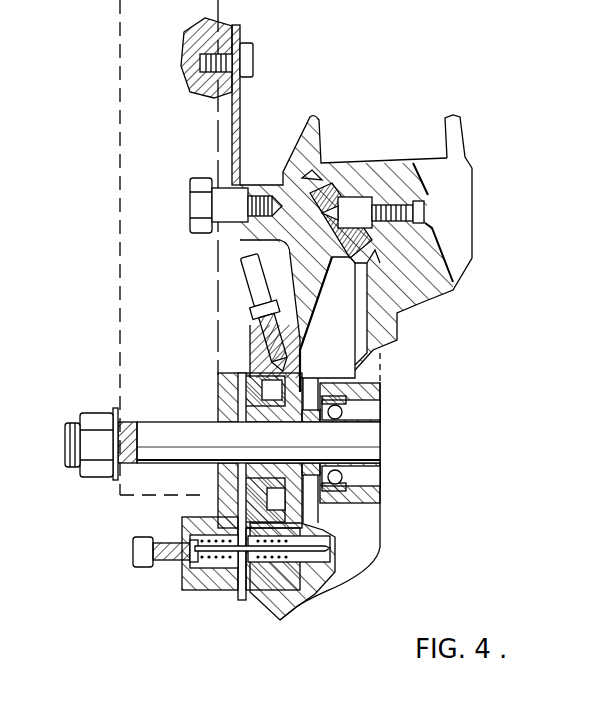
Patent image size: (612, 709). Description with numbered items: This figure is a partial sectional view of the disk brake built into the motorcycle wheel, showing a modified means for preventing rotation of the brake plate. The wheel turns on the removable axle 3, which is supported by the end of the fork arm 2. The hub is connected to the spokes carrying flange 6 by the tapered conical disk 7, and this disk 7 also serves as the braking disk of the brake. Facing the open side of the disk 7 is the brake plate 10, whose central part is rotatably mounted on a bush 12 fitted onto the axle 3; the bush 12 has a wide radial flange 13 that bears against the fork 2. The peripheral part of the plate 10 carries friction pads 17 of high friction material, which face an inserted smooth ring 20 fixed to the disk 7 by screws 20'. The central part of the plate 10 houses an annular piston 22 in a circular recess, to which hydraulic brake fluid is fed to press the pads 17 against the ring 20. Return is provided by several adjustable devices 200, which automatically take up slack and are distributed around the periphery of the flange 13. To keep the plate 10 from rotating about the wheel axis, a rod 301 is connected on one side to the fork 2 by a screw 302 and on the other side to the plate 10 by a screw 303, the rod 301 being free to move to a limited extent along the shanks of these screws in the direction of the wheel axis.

The fork arm 2 is at (128, 127).
The axle 3 is at (363, 438).
The spokes carrying flange 6 is at (412, 167).
The tapered conical disk 7 is at (423, 260).
The brake plate 10 is at (298, 293).
The bush 12 is at (311, 410).
The radial flange 13 is at (236, 392).
The friction pads 17 is at (327, 197).
The smooth ring 20 is at (353, 170).
The screws 20' is at (421, 212).
The annular piston 22 is at (226, 490).
The adjustable device 200 is at (240, 597).
The rod 301 is at (243, 100).
The screw 302 is at (254, 56).
The screw 303 is at (207, 233).